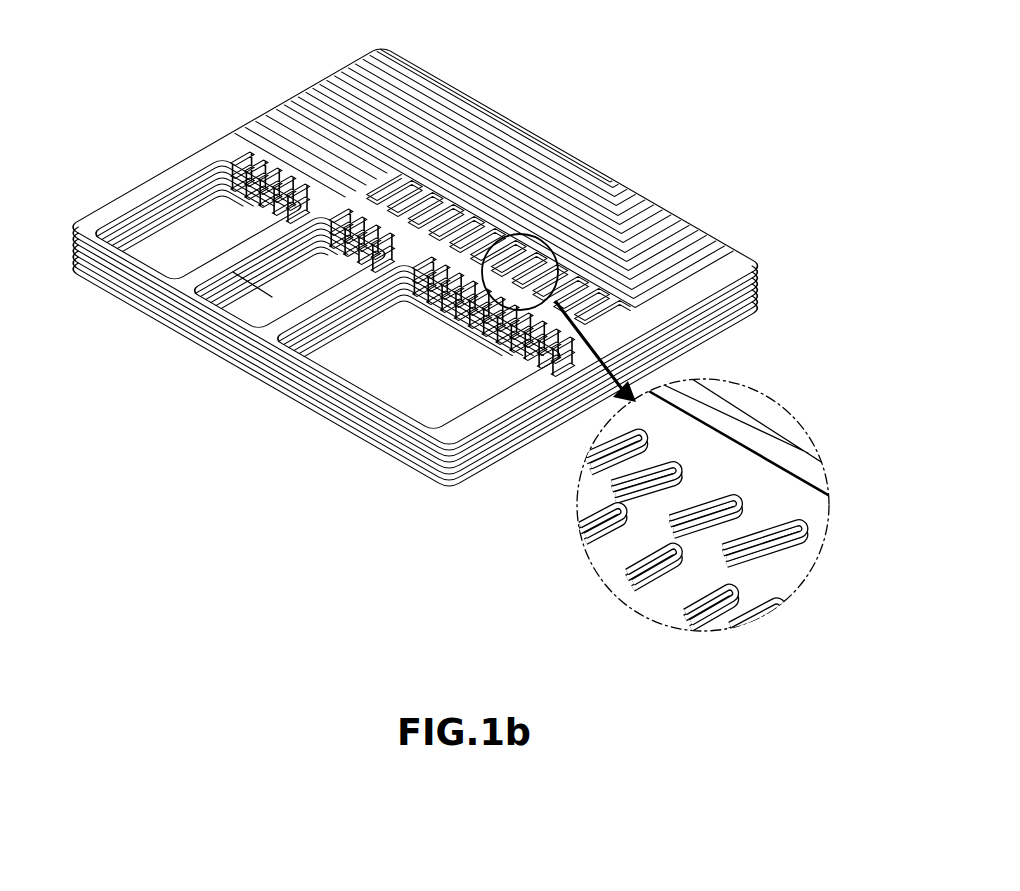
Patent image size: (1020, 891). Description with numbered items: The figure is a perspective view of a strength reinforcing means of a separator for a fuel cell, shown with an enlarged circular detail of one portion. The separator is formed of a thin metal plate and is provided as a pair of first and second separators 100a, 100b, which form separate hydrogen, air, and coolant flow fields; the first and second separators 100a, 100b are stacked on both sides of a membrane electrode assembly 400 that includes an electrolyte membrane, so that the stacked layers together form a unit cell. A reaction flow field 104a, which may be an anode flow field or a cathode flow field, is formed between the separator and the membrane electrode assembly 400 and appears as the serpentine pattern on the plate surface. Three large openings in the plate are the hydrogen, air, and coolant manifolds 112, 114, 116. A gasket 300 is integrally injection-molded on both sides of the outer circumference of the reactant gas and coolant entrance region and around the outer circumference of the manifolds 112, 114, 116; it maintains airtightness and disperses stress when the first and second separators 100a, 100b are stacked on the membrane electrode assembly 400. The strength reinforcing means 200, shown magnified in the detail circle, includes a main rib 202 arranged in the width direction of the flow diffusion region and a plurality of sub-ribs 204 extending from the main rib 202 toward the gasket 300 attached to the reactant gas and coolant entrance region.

The reaction flow field 104a is at (548, 160).
The hydrogen manifold 112 is at (177, 242).
The air manifold 114 is at (460, 390).
The coolant manifold 116 is at (143, 313).
The first separator 100a is at (194, 320).
The second separator 100b is at (228, 350).
The membrane electrode assembly 400 is at (262, 366).
The gasket 300 is at (373, 403).
The strength reinforcing means 200 is at (714, 440).
The main rib 202 is at (763, 481).
The sub-ribs 204 is at (823, 537).